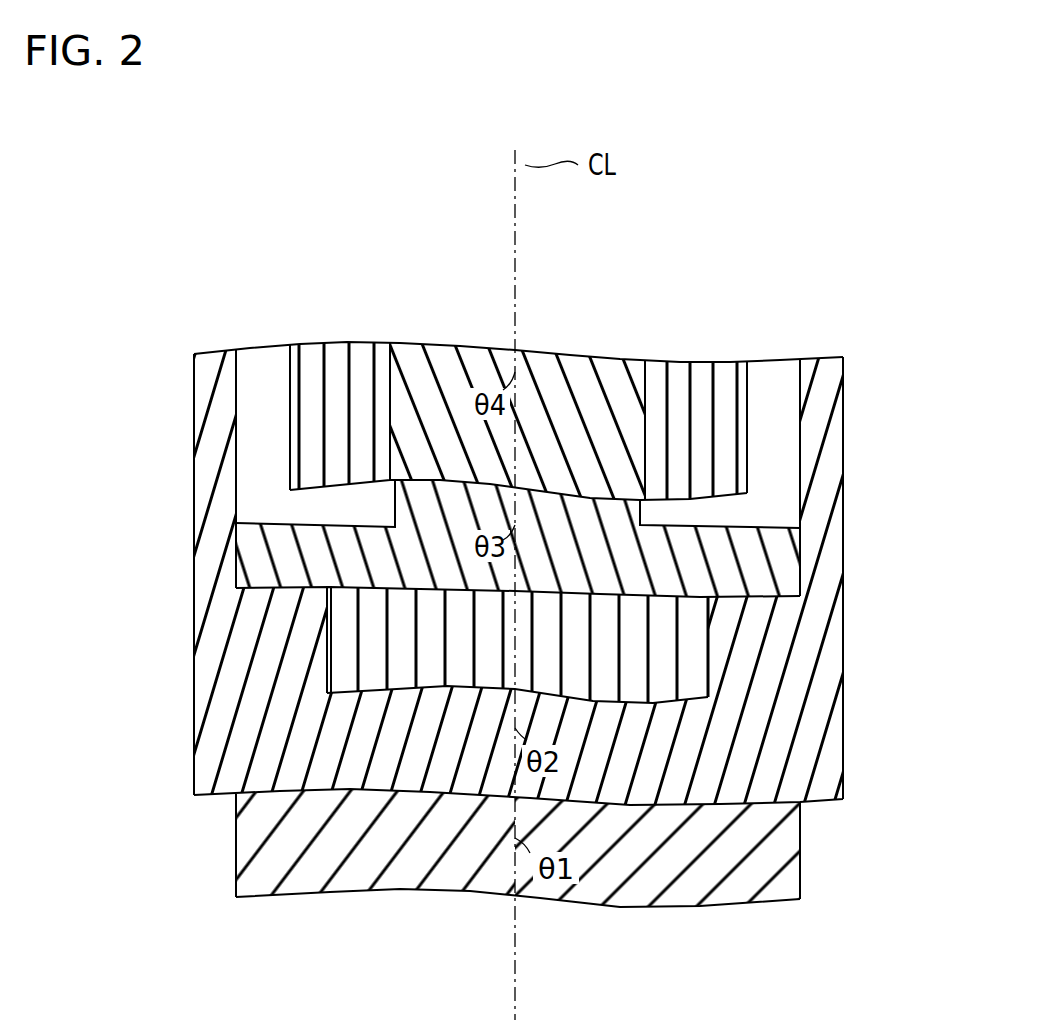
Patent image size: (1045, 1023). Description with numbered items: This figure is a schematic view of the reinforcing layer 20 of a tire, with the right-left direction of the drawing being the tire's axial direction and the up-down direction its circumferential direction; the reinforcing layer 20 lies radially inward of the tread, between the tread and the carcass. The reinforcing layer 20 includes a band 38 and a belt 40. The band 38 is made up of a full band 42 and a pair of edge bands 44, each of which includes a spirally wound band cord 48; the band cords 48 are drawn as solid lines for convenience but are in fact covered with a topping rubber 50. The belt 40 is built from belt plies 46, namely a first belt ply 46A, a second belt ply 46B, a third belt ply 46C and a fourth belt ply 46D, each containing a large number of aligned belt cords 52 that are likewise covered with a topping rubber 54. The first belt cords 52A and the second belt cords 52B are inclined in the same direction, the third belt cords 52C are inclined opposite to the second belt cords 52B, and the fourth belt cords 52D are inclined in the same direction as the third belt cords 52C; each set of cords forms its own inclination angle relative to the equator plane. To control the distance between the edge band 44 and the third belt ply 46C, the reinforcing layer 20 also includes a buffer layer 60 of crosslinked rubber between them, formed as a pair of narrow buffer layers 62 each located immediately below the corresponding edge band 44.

The reinforcing layer 20 is at (867, 294).
The band 38 is at (518, 463).
The belt 40 is at (732, 561).
The full band 42 is at (723, 645).
The edge band 44 is at (433, 461).
The belt ply 46 is at (732, 561).
The first belt ply 46A is at (814, 856).
The second belt ply 46B is at (857, 747).
The third belt ply 46C is at (813, 556).
The fourth belt ply 46D is at (568, 339).
The band cord 48 is at (331, 334).
The topping rubber 50 is at (305, 350).
The belt cord 52 is at (306, 607).
The first belt cords 52A is at (397, 868).
The second belt cords 52B is at (248, 760).
The third belt cords 52C is at (262, 548).
The fourth belt cords 52D is at (478, 345).
The topping rubber 54 is at (446, 347).
The buffer layer 60 is at (481, 436).
The narrow buffer layer 62 is at (258, 354).